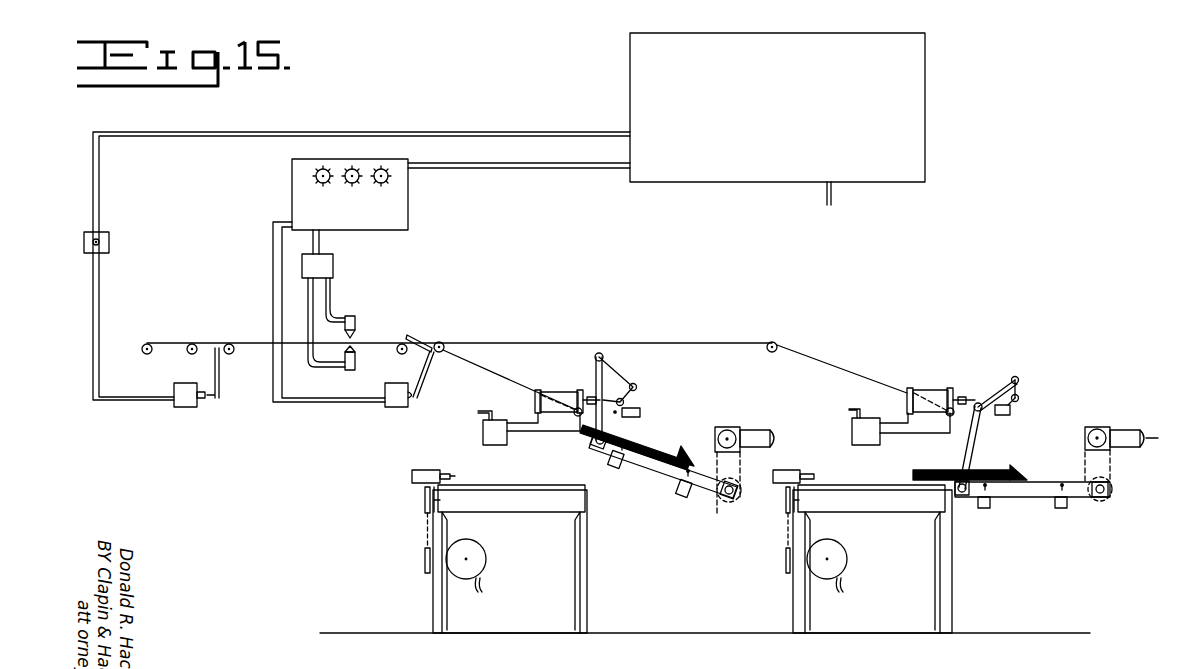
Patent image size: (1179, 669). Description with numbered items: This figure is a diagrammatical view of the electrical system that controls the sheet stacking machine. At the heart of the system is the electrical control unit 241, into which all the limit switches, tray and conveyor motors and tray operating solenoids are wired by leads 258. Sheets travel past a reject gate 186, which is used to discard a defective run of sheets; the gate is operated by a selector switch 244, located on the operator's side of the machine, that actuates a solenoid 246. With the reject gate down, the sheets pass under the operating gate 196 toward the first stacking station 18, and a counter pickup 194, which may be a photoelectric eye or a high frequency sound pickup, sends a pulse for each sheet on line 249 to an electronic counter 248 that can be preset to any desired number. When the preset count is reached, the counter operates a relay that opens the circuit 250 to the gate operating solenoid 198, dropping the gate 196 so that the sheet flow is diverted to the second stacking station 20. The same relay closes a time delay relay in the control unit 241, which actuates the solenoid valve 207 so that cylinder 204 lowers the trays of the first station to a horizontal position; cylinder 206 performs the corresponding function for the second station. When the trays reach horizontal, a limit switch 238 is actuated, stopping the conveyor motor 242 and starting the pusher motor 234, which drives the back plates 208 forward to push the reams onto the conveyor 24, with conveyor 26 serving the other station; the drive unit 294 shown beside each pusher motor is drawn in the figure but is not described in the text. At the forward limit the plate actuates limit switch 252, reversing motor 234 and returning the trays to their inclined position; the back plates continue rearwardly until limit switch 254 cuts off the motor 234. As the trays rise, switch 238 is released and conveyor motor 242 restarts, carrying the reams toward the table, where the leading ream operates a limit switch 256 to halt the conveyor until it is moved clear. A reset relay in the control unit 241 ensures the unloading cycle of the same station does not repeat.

The electrical control unit 241 is at (762, 71).
The selector switch 244 is at (84, 250).
The electronic counter 248 is at (409, 160).
The line 249 is at (323, 243).
The circuit 250 is at (273, 300).
The counter pickup 194 is at (356, 366).
The reject gate 186 is at (228, 328).
The solenoid 246 is at (186, 407).
The gate operating solenoid 198 is at (396, 407).
The operating gate 196 is at (423, 342).
The cylinder 204 is at (566, 384).
The limit switch 238 is at (641, 411).
The solenoid valve 207 is at (495, 446).
The back plates 208 is at (695, 438).
The limit switch 252 is at (618, 470).
The limit switch 254 is at (690, 497).
The first stacking station 18 is at (646, 511).
The drive unit 294 is at (752, 427).
The pusher motor 234 is at (1114, 450).
The conveyor 24 is at (390, 564).
The conveyor motor 242 is at (481, 545).
The limit switch 256 is at (415, 470).
The conveyor 26 is at (768, 572).
The cylinder 206 is at (946, 396).
The second stacking station 20 is at (1030, 528).
The leads 258 is at (825, 200).